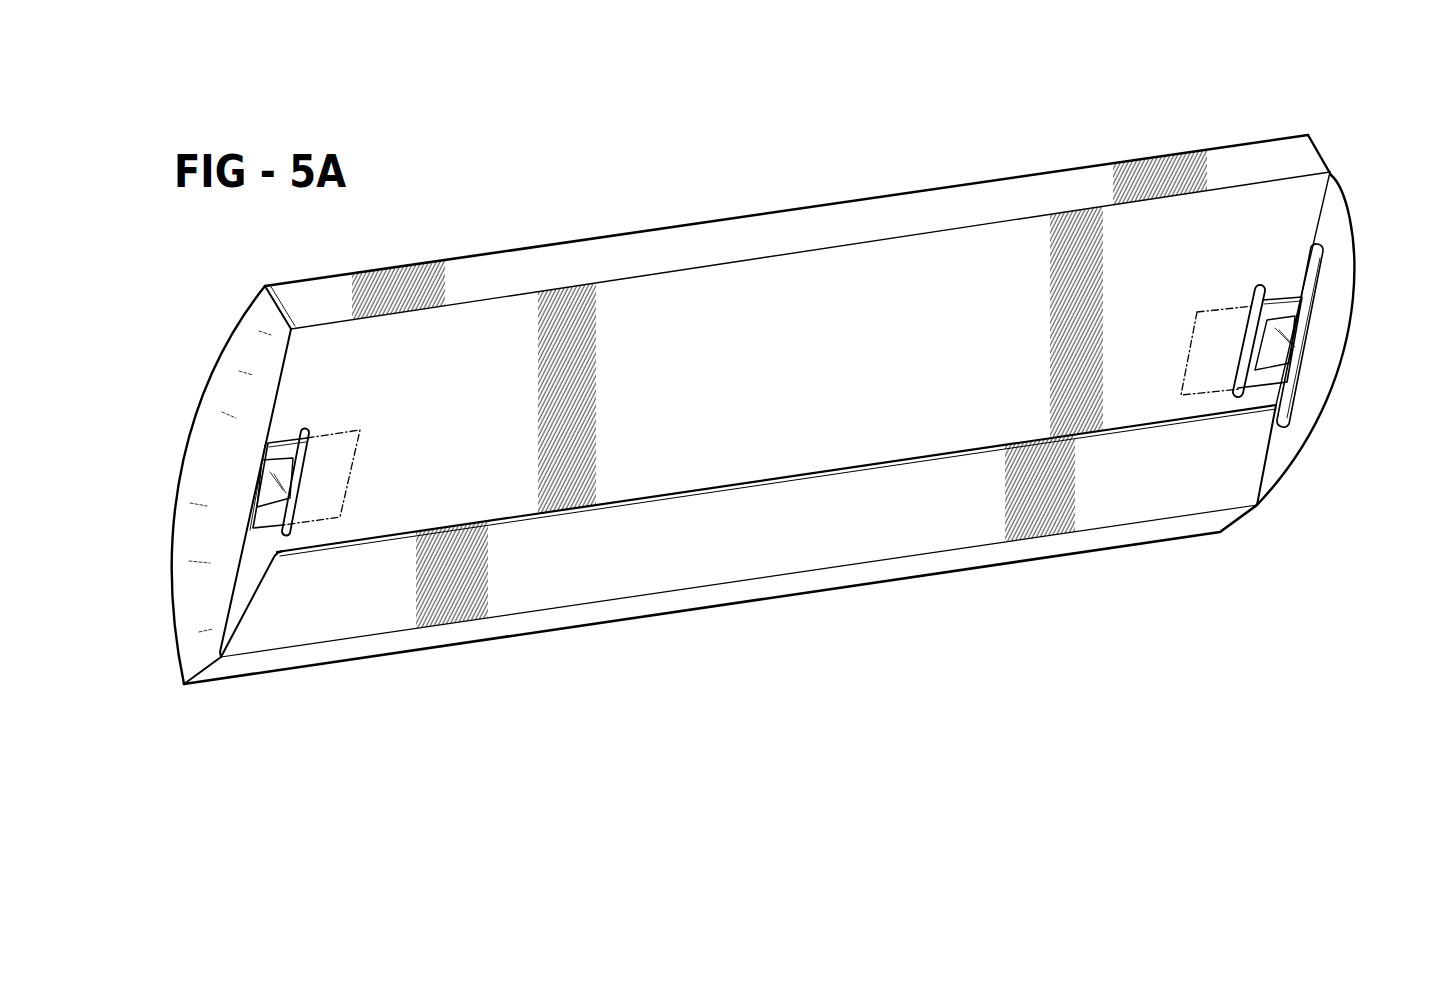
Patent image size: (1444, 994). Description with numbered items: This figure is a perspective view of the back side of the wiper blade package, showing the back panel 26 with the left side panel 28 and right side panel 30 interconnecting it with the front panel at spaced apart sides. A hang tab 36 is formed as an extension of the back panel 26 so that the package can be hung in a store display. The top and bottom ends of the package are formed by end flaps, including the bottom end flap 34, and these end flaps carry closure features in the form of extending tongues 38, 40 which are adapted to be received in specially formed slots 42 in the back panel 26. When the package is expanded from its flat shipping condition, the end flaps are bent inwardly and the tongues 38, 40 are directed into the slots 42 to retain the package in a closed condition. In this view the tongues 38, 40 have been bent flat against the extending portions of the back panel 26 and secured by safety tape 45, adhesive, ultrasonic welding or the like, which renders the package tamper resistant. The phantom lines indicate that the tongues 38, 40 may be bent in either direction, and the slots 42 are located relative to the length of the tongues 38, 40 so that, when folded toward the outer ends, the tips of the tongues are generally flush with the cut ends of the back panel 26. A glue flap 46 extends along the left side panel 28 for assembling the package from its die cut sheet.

The back panel 26 is at (889, 311).
The left side panel 28 is at (920, 563).
The right side panel 30 is at (1243, 158).
The bottom end flap 34 is at (184, 547).
The hang tab 36 is at (1351, 296).
The tongue 38 is at (1289, 297).
The tongue 40 is at (346, 507).
The slot 42 is at (306, 431).
The safety tape 45 is at (277, 502).
The glue flap 46 is at (1128, 498).